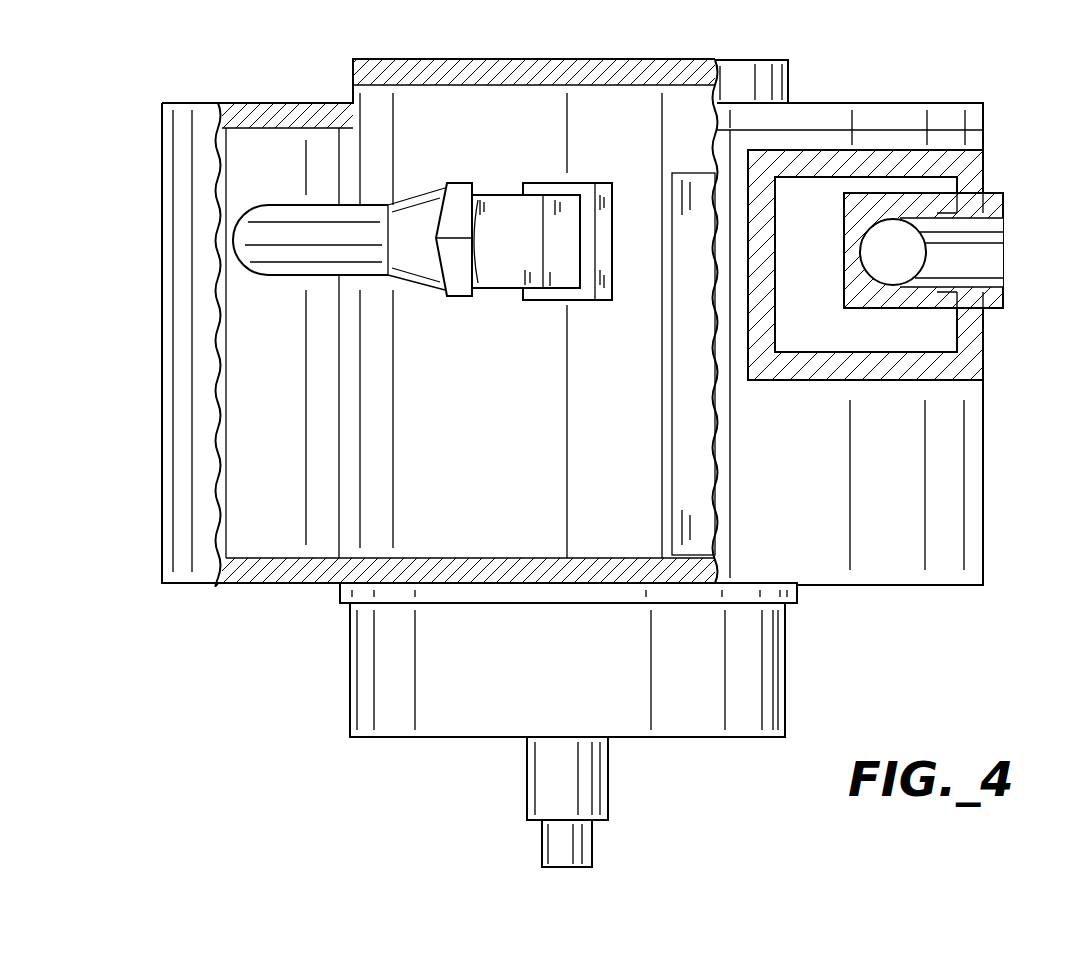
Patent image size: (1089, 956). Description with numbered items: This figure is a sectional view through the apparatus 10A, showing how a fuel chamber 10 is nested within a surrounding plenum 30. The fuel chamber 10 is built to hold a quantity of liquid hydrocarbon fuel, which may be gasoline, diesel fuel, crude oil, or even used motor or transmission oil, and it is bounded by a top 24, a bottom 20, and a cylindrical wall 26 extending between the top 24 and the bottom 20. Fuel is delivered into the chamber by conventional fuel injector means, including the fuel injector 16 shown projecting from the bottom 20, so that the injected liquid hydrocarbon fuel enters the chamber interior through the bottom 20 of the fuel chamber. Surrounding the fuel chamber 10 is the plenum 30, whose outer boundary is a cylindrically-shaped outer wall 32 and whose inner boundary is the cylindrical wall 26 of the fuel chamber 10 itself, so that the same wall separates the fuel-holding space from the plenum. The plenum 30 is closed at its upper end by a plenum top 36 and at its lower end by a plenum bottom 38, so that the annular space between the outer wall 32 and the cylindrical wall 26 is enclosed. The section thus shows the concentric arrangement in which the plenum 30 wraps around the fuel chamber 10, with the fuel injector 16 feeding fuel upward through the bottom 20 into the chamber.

The apparatus 10A is at (256, 94).
The fuel chamber 10 is at (448, 140).
The top 24 is at (718, 62).
The plenum top 36 is at (920, 103).
The plenum 30 is at (262, 326).
The cylindrical wall 26 is at (466, 404).
The outer wall 32 is at (975, 500).
The plenum bottom 38 is at (298, 590).
The bottom 20 is at (797, 593).
The fuel injector 16 is at (608, 780).